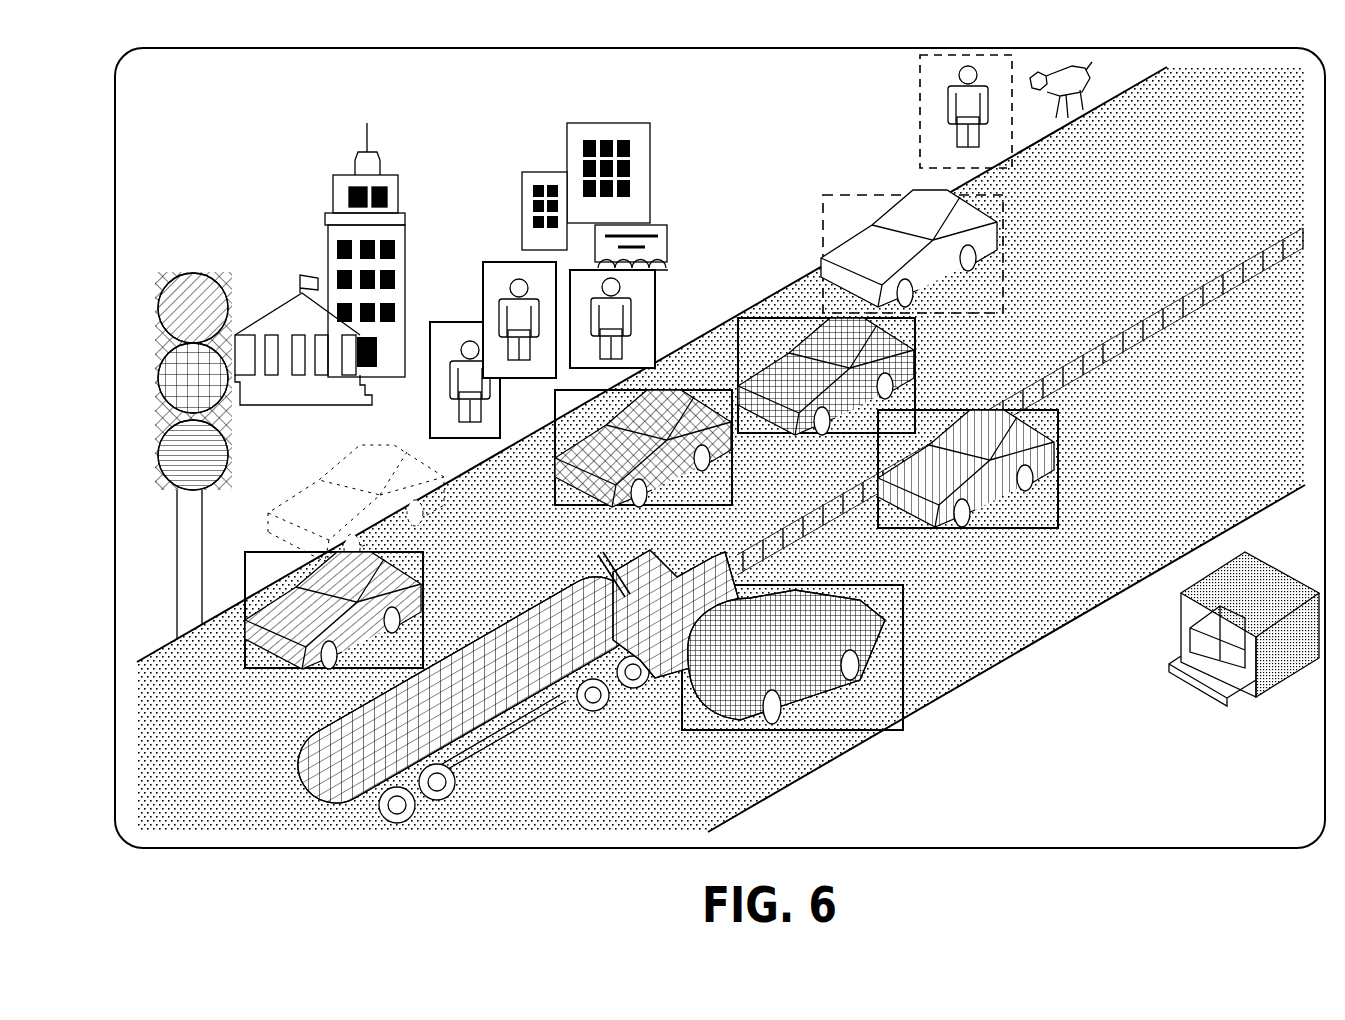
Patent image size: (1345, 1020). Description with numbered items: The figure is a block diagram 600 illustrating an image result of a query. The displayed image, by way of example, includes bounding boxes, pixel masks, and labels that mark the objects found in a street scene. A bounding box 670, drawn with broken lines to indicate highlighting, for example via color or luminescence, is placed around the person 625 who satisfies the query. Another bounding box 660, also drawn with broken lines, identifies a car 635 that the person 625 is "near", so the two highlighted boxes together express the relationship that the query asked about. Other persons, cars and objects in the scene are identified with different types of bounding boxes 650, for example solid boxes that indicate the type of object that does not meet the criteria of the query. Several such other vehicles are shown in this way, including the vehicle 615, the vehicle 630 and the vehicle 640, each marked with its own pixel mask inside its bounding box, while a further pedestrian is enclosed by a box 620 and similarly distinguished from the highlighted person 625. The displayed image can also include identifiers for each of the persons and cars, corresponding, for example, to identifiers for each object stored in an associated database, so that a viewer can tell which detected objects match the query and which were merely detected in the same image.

The block diagram 600 is at (720, 425).
The detected vehicle 615 is at (960, 520).
The pedestrian bounding box 620 is at (436, 335).
The person 625 is at (935, 110).
The detected vehicle 630 is at (795, 693).
The car 635 is at (867, 242).
The detected vehicle 640 is at (815, 327).
The bounding boxes 650 is at (677, 388).
The bounding box 660 is at (823, 233).
The bounding box 670 is at (920, 102).